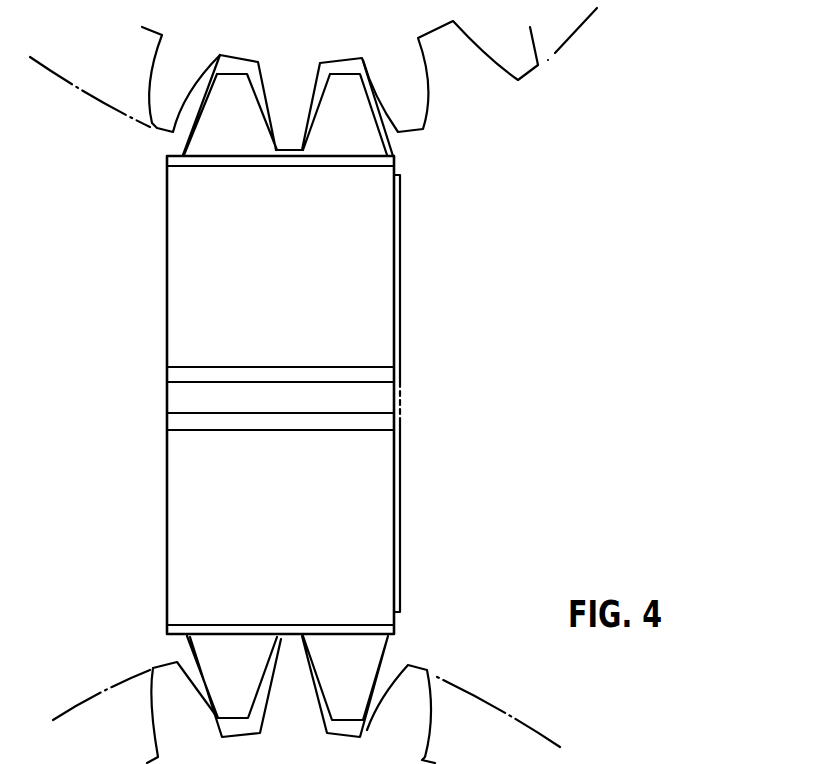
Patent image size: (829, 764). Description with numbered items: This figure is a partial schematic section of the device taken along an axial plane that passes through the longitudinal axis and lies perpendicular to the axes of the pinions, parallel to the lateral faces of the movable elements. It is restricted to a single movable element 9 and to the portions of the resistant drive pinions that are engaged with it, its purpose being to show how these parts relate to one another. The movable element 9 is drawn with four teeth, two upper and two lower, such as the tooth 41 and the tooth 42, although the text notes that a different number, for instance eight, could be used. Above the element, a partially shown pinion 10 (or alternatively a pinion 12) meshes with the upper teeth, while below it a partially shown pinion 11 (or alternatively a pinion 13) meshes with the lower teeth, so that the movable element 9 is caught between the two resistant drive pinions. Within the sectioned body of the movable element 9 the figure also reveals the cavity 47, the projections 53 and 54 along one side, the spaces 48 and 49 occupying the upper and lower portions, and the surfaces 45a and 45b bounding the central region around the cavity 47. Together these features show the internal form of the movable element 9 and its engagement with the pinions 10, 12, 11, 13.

The movable element 9 is at (186, 322).
The pinion 10 is at (313, 70).
The pinion 12 is at (368, 43).
The pinion 11 is at (330, 712).
The pinion 13 is at (377, 762).
The tooth 41 is at (363, 672).
The tooth 42 is at (363, 132).
The surface 45a is at (348, 375).
The surface 45b is at (348, 427).
The cavity 47 is at (218, 403).
The space 48 is at (255, 276).
The space 49 is at (252, 507).
The projection 53 is at (395, 238).
The projection 54 is at (397, 424).